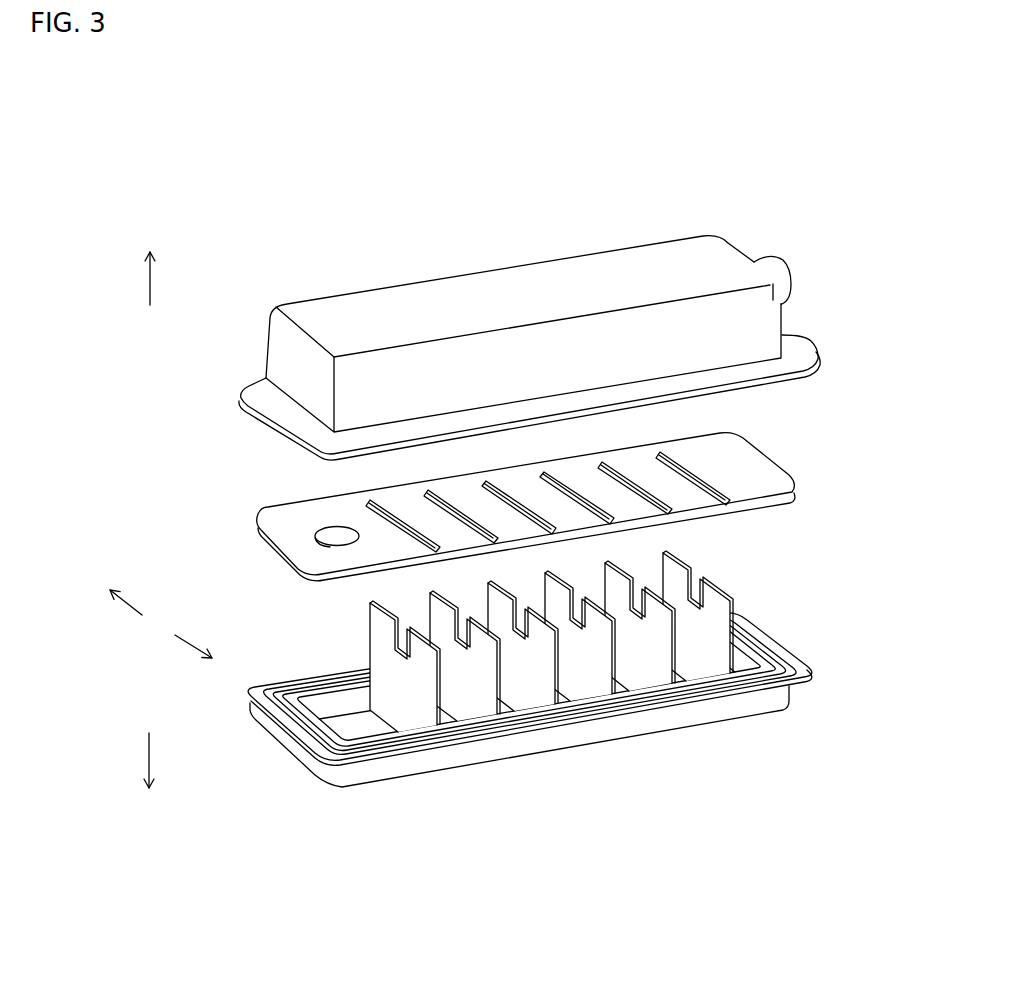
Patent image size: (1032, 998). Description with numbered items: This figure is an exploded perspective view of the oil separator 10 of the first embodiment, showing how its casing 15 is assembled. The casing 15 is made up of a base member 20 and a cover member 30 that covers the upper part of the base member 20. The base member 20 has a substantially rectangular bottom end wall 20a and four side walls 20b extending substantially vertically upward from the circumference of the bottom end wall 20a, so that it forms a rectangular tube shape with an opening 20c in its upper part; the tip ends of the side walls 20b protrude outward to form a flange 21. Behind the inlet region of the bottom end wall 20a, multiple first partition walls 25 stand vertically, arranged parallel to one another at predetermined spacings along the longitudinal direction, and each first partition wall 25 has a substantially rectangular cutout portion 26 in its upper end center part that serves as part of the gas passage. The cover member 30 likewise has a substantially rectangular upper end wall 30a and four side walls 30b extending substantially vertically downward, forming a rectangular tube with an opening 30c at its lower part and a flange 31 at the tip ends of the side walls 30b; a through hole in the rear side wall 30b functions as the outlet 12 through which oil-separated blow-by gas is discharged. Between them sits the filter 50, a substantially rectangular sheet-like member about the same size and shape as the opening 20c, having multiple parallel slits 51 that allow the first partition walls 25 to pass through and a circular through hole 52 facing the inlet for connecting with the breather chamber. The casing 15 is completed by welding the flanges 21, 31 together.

The storage case 10 is at (328, 138).
The casing 15 is at (430, 223).
The cover member 30 is at (715, 227).
The upper end wall 30a is at (602, 270).
The side walls 30b is at (767, 332).
The opening 30c is at (757, 391).
The flange 31 is at (252, 395).
The outlet 12 is at (790, 273).
The filter 50 is at (800, 478).
The slits 51 is at (493, 493).
The circular through hole 52 is at (330, 546).
The base member 20 is at (778, 723).
The bottom end wall 20a is at (372, 734).
The side walls 20b is at (568, 740).
The opening 20c is at (330, 708).
The flange 21 is at (268, 733).
The first partition walls 25 is at (493, 602).
The cutout portion 26 is at (510, 630).